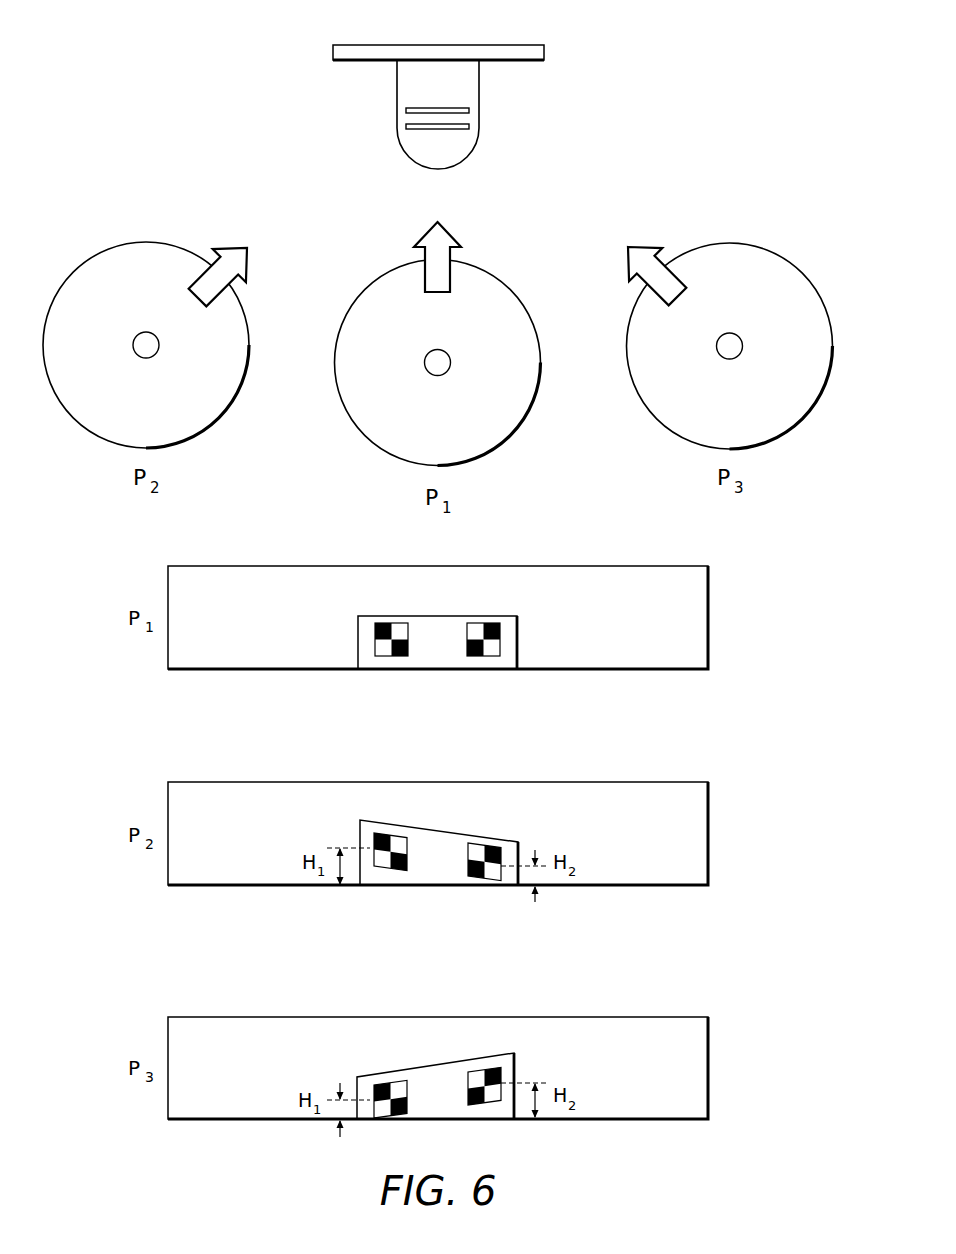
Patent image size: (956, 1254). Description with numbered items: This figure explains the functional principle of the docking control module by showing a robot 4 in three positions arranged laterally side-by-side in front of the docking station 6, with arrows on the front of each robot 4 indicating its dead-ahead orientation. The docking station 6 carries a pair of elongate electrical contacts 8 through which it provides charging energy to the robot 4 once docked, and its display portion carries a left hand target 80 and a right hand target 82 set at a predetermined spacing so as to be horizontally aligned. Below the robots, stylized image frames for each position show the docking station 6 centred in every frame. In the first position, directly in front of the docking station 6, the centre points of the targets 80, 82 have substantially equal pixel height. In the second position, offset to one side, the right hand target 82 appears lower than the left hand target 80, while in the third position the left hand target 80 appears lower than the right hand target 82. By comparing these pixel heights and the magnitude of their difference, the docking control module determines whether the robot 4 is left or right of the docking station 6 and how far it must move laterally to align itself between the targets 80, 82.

The robot 4 is at (146, 243).
The docking station 6 is at (546, 49).
The electrical contacts 8 is at (470, 125).
The left hand target 80 is at (388, 621).
The right hand target 82 is at (479, 621).